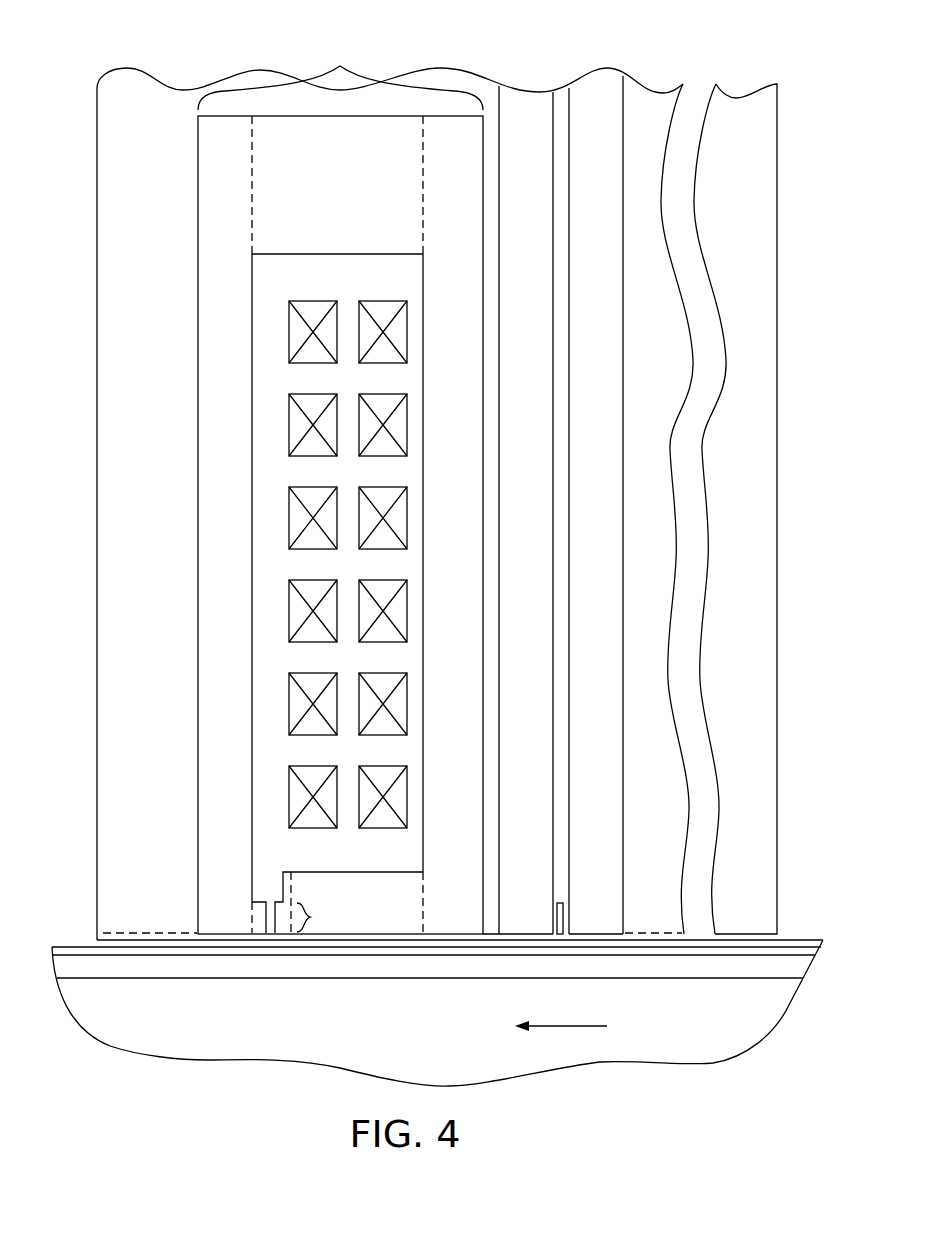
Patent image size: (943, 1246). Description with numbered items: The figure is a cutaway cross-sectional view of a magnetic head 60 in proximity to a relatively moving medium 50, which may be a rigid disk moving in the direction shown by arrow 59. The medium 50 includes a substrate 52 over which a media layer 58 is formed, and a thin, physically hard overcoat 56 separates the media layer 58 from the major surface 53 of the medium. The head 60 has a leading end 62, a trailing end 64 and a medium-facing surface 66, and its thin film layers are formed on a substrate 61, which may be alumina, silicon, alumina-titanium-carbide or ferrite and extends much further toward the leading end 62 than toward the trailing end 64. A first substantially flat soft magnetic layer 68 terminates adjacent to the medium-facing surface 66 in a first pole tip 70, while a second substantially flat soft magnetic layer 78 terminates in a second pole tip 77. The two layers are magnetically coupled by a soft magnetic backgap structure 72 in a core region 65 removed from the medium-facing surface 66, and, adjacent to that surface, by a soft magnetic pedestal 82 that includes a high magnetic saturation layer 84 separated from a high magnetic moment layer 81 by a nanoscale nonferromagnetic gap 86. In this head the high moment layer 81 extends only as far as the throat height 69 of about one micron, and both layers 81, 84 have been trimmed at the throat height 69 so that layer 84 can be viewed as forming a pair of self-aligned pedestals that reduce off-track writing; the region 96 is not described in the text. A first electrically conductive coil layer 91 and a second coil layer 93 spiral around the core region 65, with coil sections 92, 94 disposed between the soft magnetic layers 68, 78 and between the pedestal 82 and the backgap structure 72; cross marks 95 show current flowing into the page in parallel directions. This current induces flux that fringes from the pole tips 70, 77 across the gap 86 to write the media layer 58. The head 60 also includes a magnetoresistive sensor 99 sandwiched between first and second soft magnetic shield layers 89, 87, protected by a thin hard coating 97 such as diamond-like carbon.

The medium 50 is at (751, 1079).
The substrate 52 is at (405, 1052).
The major surface 53 is at (808, 934).
The overcoat 56 is at (678, 950).
The media layer 58 is at (190, 967).
The arrow 59 is at (562, 1028).
The magnetic head 60 is at (102, 52).
The substrate 61 is at (644, 375).
The leading end 62 is at (790, 700).
The trailing end 64 is at (88, 702).
The core region 65 is at (340, 73).
The medium-facing surface 66 is at (128, 955).
The first soft magnetic layer 68 is at (439, 609).
The throat height 69 is at (319, 917).
The first pole tip 70 is at (290, 950).
The backgap structure 72 is at (330, 174).
The second pole tip 77 is at (237, 950).
The second soft magnetic layer 78 is at (219, 607).
The high magnetic moment layer 81 is at (267, 900).
The pedestal 82 is at (352, 917).
The high magnetic saturation layer 84 is at (291, 893).
The nonferromagnetic gap 86 is at (262, 918).
The second soft magnetic shield layer 87 is at (583, 750).
The first soft magnetic shield layer 89 is at (514, 750).
The first electrically conductive coil layer 91 is at (383, 264).
The coil sections 92 is at (407, 769).
The second electrically conductive coil layer 93 is at (314, 264).
The coil sections 94 is at (289, 497).
The cross marks 95 is at (395, 443).
The outer region 96 is at (139, 575).
The hard coating 97 is at (742, 933).
The magnetoresistive sensor 99 is at (557, 903).